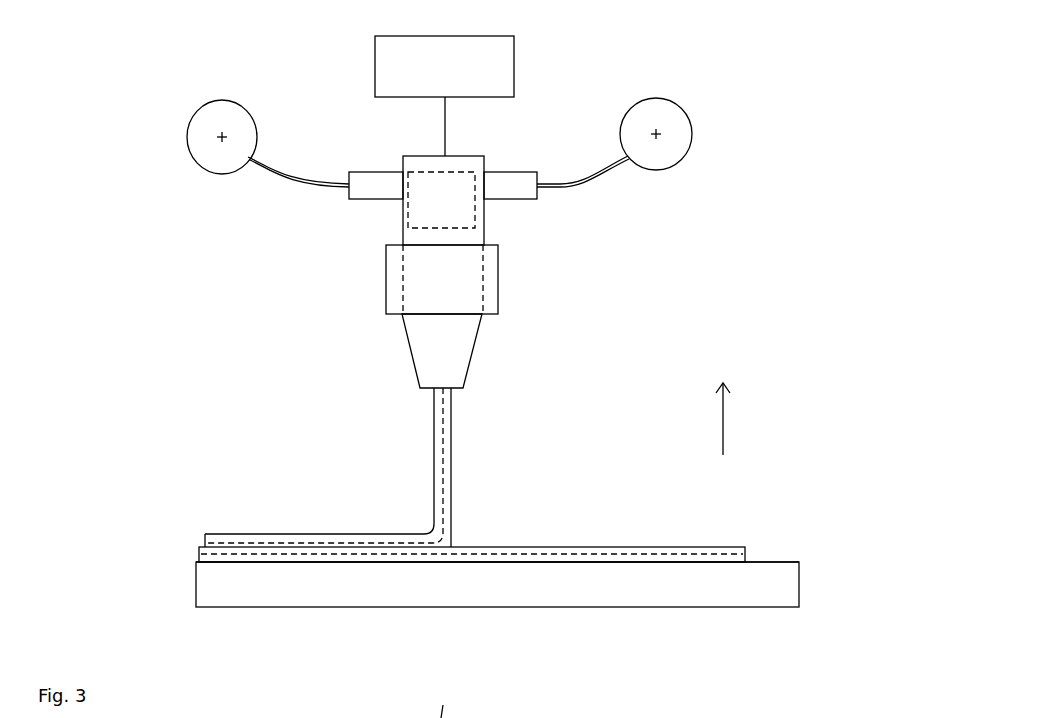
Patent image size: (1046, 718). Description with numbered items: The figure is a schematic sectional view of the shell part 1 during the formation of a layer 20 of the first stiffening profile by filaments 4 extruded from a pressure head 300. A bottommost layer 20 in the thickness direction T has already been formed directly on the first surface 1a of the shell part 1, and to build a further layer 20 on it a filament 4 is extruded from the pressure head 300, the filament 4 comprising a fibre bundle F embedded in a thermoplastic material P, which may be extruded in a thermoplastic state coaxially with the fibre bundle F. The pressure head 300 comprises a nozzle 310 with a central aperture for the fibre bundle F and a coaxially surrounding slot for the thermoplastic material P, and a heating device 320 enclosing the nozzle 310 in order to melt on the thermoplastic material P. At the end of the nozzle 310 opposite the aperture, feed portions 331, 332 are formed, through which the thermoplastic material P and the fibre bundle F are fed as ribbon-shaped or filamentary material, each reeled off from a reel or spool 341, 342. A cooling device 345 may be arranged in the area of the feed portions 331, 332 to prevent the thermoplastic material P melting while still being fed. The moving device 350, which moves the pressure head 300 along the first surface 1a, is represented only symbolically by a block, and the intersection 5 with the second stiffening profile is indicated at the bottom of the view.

The moving device 350 is at (444, 96).
The cooling device 345 is at (418, 168).
The feed portion 331 is at (370, 200).
The feed portion 332 is at (517, 200).
The heating device 320 is at (386, 283).
The nozzle 310 is at (421, 350).
The reel or spool 341 is at (192, 113).
The reel or spool 342 is at (682, 104).
The pressure head 300 is at (602, 276).
The filament 4 is at (424, 442).
The layer 20 is at (190, 532).
The shell part 1 is at (723, 594).
The first surface 1a is at (770, 555).
The thickness direction T is at (723, 405).
The thermoplastic material P is at (280, 171).
The fibre bundle F is at (597, 175).
The intersection 5 is at (448, 692).